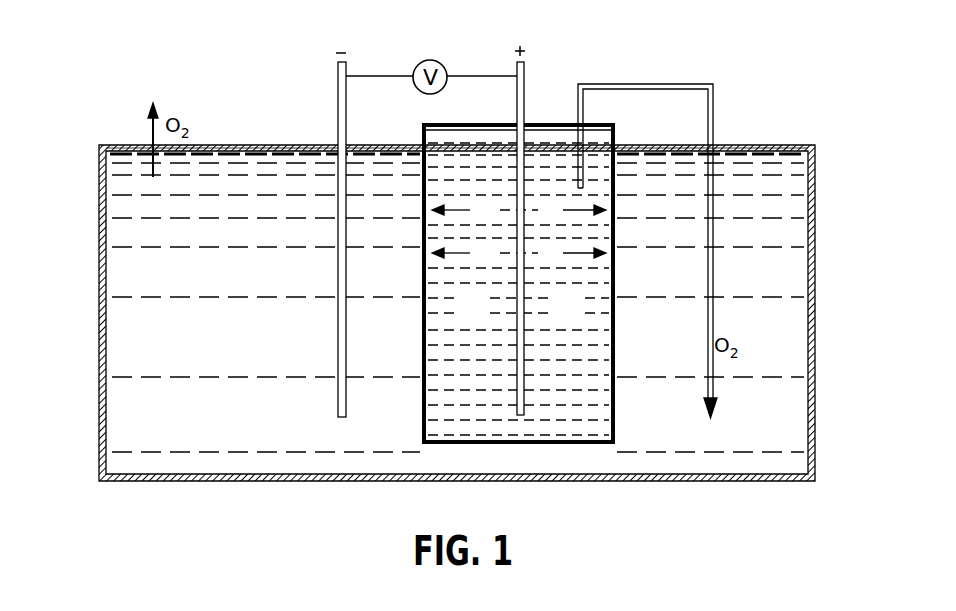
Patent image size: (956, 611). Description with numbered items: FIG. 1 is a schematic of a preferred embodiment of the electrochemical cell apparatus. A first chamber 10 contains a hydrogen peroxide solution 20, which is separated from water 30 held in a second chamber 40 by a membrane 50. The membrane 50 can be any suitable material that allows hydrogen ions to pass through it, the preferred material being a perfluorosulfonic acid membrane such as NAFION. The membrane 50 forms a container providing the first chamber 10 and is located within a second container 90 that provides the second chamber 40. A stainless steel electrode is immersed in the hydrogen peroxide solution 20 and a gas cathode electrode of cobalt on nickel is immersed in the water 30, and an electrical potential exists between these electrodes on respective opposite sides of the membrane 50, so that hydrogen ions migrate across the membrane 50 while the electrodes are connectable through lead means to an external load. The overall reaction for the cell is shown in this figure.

The first chamber 10 is at (487, 316).
The hydrogen peroxide solution 20 is at (560, 415).
The water 30 is at (135, 281).
The second chamber 40 is at (268, 335).
The membrane 50 is at (617, 415).
The second container 90 is at (813, 191).